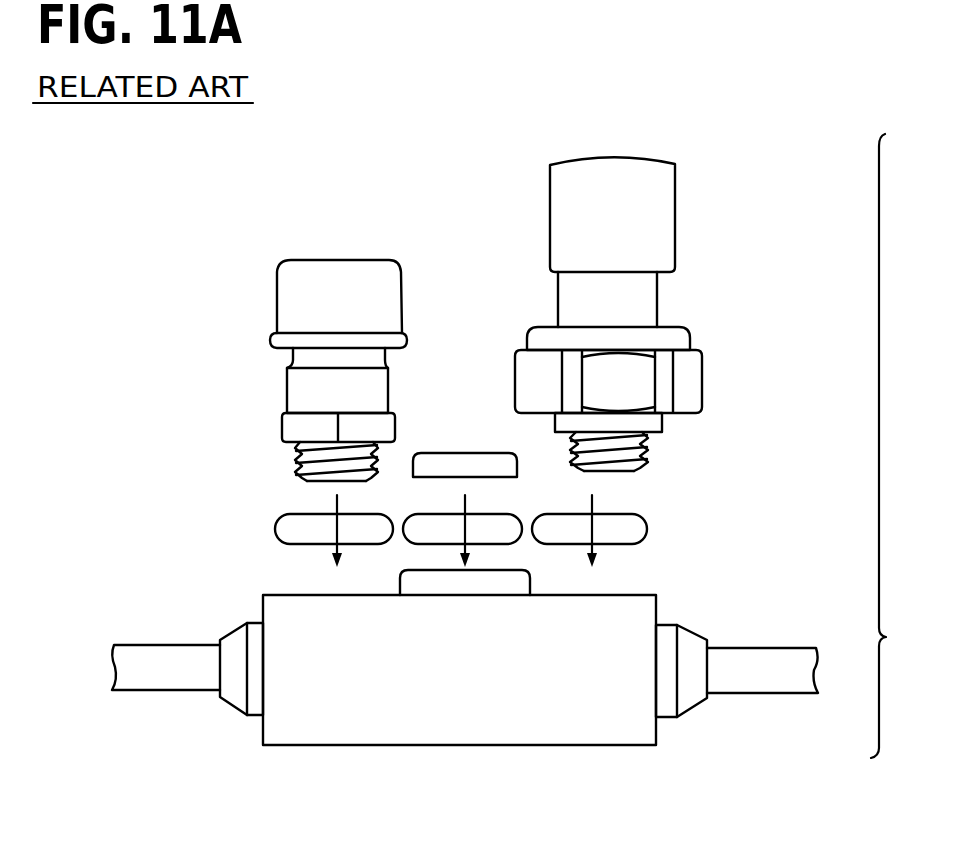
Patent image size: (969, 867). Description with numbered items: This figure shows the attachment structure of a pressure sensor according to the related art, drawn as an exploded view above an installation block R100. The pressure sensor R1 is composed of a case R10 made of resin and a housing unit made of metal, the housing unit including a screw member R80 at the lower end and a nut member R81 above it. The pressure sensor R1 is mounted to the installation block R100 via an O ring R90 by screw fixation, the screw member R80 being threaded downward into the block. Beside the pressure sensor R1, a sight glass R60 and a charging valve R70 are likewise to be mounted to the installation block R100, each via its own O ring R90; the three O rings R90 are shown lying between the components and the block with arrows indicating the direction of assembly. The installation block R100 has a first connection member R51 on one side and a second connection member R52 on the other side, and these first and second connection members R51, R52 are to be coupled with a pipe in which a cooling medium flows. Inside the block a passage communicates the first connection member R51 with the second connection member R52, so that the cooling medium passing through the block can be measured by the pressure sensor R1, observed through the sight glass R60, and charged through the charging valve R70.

The pressure sensor R1 is at (660, 309).
The case R10 is at (677, 227).
The nut member R81 is at (701, 369).
The screw member R80 is at (651, 448).
The charging valve R70 is at (287, 397).
The sight glass R60 is at (461, 453).
The O ring R90 is at (275, 529).
The installation block R100 is at (614, 597).
The first connection member R51 is at (152, 645).
The second connection member R52 is at (770, 648).